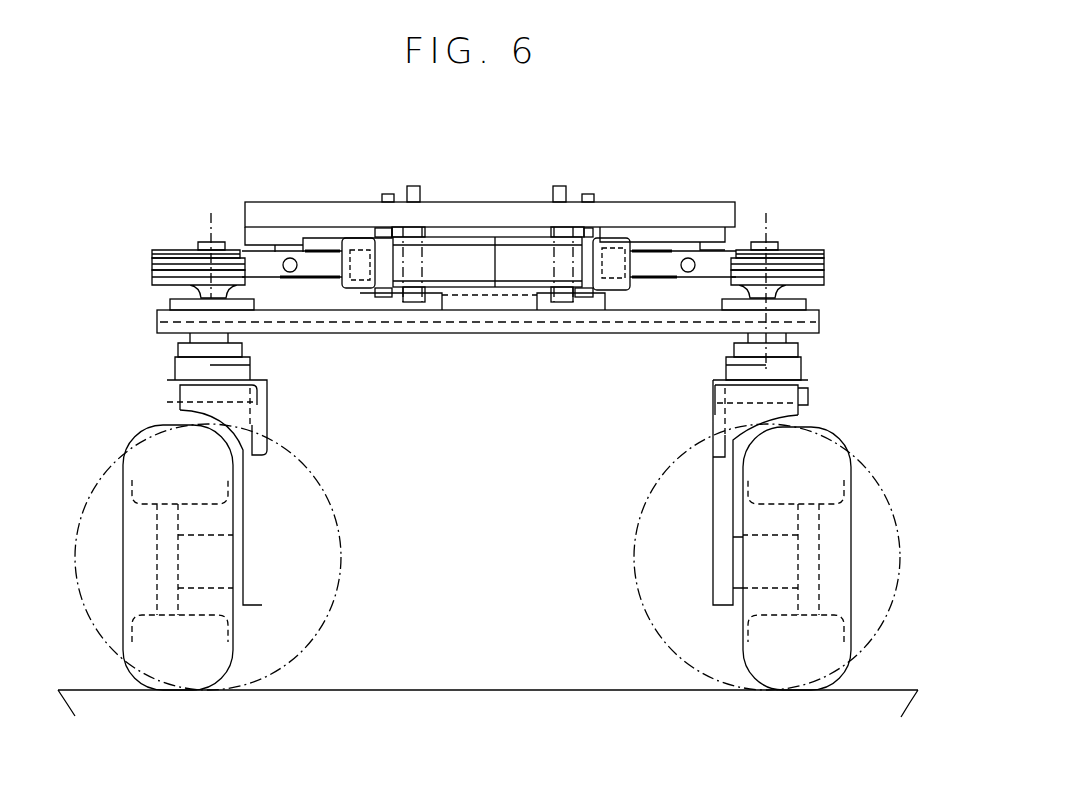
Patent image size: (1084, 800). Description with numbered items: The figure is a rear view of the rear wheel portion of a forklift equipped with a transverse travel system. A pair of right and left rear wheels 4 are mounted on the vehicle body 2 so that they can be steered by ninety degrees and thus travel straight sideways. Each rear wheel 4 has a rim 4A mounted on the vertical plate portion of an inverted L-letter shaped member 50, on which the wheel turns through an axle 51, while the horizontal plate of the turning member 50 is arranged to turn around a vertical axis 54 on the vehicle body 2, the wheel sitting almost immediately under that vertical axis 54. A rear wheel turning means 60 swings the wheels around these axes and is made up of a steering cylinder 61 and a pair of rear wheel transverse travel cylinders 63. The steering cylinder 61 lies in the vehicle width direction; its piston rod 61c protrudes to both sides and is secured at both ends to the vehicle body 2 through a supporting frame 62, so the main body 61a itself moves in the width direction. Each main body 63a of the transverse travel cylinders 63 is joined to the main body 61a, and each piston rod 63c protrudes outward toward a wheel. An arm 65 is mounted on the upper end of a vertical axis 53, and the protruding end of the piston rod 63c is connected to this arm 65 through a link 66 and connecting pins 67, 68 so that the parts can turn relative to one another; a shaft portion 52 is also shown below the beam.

The vehicle body 2 is at (413, 335).
The rear wheel 4 is at (162, 655).
The rim 4A is at (143, 553).
The inverted L-letter shaped member 50 is at (252, 490).
The axle 51 is at (210, 632).
The steering shaft 52 is at (188, 338).
The vertical axis 53 is at (193, 298).
The vertical axis 54 is at (262, 369).
The rear wheel turning means 60 is at (787, 193).
The steering cylinder 61 is at (479, 202).
The main body 61a is at (515, 237).
The piston rod 61c is at (650, 250).
The supporting frame 62 is at (292, 202).
The rear wheel transverse travel cylinder 63 is at (445, 232).
The main body 63a is at (513, 310).
The piston rod 63c is at (330, 250).
The arm 65 is at (170, 285).
The link 66 is at (178, 250).
The connecting pin 67 is at (152, 260).
The connecting pin 68 is at (236, 242).